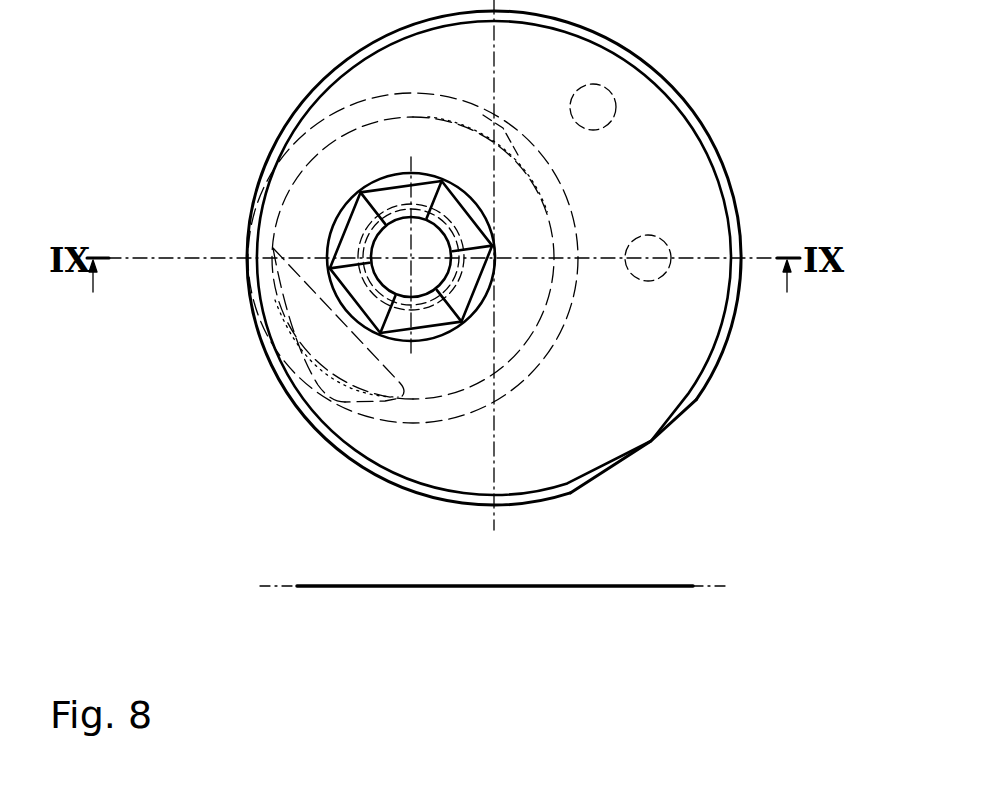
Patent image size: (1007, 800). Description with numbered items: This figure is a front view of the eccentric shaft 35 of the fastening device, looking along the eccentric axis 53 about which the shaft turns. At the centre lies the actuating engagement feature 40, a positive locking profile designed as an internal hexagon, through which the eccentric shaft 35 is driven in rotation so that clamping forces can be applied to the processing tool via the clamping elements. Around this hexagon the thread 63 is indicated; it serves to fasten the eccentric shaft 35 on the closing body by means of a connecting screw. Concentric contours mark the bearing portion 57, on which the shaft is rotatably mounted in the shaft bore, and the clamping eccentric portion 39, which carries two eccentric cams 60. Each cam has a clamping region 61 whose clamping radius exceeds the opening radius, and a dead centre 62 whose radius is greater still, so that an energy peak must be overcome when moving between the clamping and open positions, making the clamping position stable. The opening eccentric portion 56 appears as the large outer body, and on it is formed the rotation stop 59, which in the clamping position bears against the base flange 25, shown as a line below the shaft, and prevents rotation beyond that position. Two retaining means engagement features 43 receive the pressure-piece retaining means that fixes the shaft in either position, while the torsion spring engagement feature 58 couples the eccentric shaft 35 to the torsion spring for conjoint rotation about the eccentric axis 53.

The base flange 25 is at (580, 588).
The eccentric shaft 35 is at (768, 346).
The clamping eccentric portion 39 is at (305, 163).
The actuating engagement feature 40 is at (355, 244).
The retaining means engagement feature 43 is at (607, 88).
The eccentric axis 53 is at (408, 265).
The opening eccentric portion 56 is at (645, 397).
The bearing portion 57 is at (310, 125).
The torsion spring engagement feature 58 is at (308, 360).
The rotation stop 59 is at (652, 442).
The eccentric cam 60 is at (503, 147).
The clamping region 61 is at (517, 153).
The dead centre 62 is at (543, 183).
The thread 63 is at (472, 308).